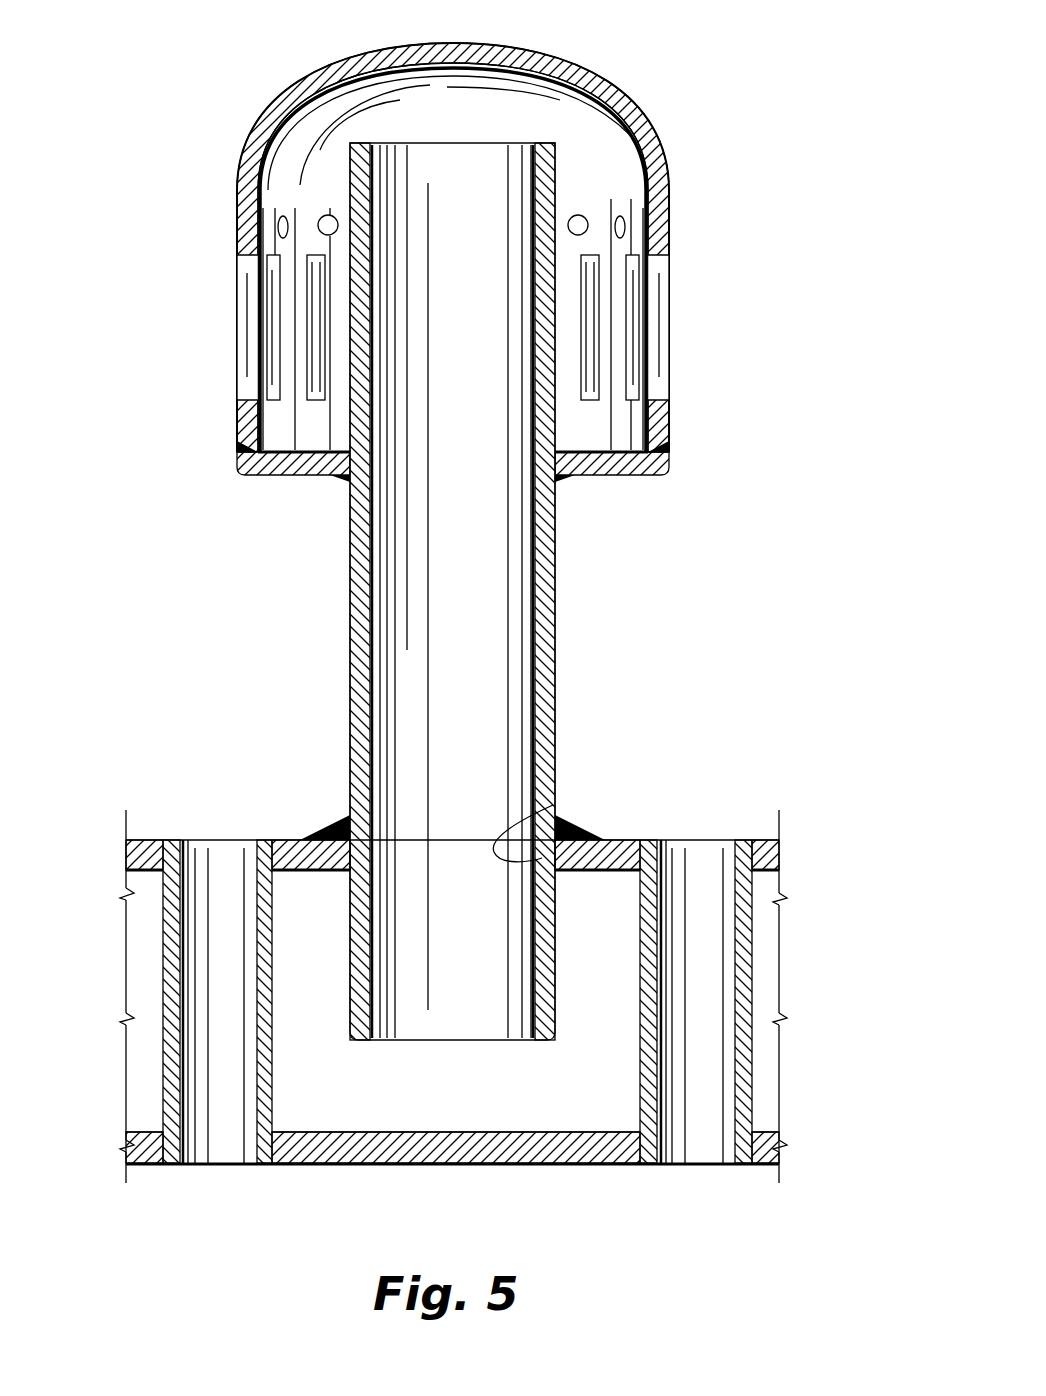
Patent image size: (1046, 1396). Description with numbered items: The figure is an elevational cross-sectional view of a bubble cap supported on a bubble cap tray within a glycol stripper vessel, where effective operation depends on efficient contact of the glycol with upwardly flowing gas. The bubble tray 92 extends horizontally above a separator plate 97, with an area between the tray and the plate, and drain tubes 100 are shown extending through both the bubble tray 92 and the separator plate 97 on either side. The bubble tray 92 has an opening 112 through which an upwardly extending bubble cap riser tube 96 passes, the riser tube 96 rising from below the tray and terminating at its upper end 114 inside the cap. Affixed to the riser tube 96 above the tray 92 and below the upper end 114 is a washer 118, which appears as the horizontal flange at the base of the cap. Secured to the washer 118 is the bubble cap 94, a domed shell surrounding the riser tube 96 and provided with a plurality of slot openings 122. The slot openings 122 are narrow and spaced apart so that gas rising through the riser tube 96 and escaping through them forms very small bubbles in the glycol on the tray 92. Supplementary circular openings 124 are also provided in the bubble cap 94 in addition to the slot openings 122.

The bubble tray 92 is at (620, 843).
The bubble cap 94 is at (653, 240).
The bubble cap riser tube 96 is at (555, 650).
The separator plate 97 is at (530, 1152).
The drain tube 100 is at (170, 993).
The opening 112 is at (553, 805).
The upper end 114 is at (545, 140).
The washer 118 is at (618, 461).
The slot opening 122 is at (653, 320).
The circular opening 124 is at (626, 218).